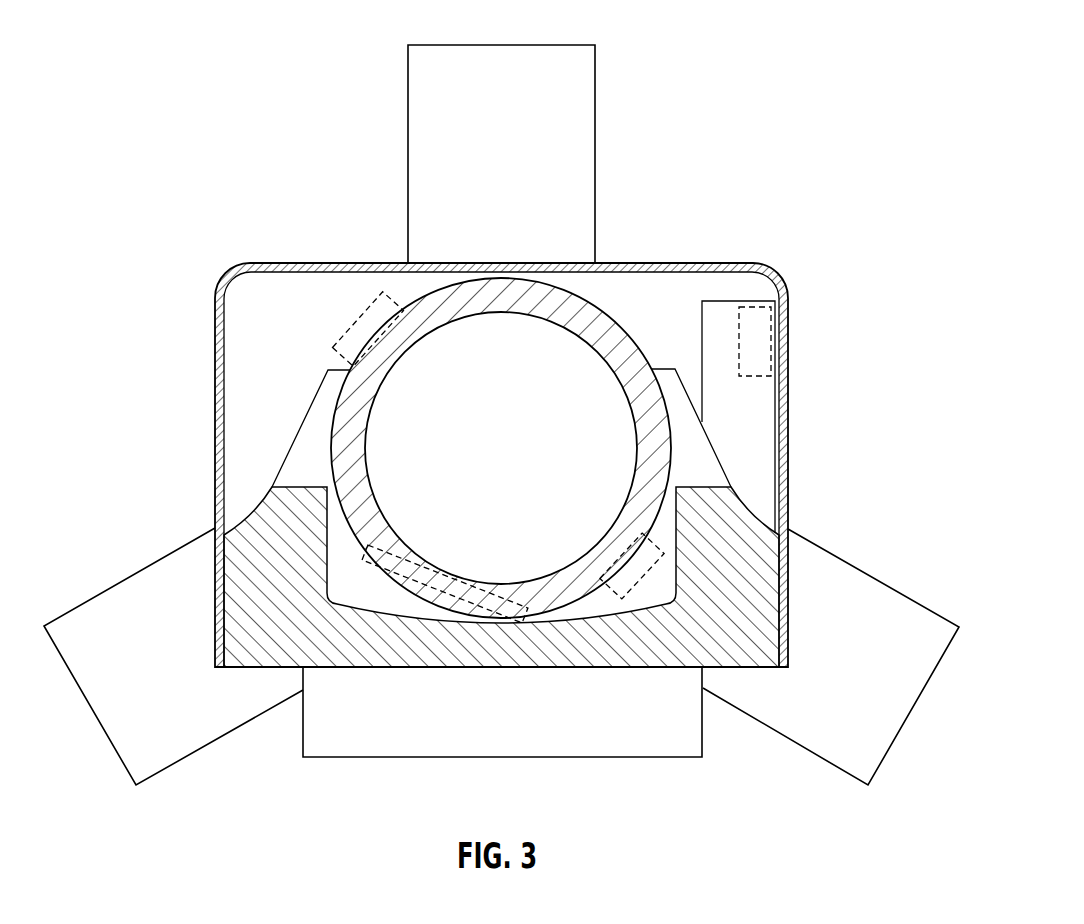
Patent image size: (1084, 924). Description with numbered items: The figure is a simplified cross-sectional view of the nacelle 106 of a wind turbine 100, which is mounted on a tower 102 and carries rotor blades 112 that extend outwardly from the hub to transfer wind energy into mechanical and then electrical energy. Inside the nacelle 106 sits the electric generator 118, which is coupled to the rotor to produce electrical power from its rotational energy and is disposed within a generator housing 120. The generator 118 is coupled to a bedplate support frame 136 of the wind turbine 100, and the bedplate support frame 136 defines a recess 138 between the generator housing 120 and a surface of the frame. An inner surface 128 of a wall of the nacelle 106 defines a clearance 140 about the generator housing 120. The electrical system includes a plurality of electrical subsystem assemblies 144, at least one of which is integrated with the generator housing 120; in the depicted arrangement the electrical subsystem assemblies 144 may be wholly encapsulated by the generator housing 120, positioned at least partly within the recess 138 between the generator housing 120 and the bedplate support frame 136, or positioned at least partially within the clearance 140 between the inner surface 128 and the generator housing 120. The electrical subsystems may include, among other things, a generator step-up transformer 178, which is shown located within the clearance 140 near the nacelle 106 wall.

The wind turbine 100 is at (229, 62).
The tower 102 is at (330, 740).
The nacelle 106 is at (732, 193).
The rotor blade 112 is at (583, 93).
The electric generator 118 is at (481, 452).
The generator housing 120 is at (625, 328).
The inner surface 128 is at (290, 276).
The bedplate support frame 136 is at (248, 543).
The recess 138 is at (374, 586).
The clearance 140 is at (270, 314).
The electrical subsystem assembly 144 is at (338, 351).
The generator step-up transformer 178 is at (752, 430).